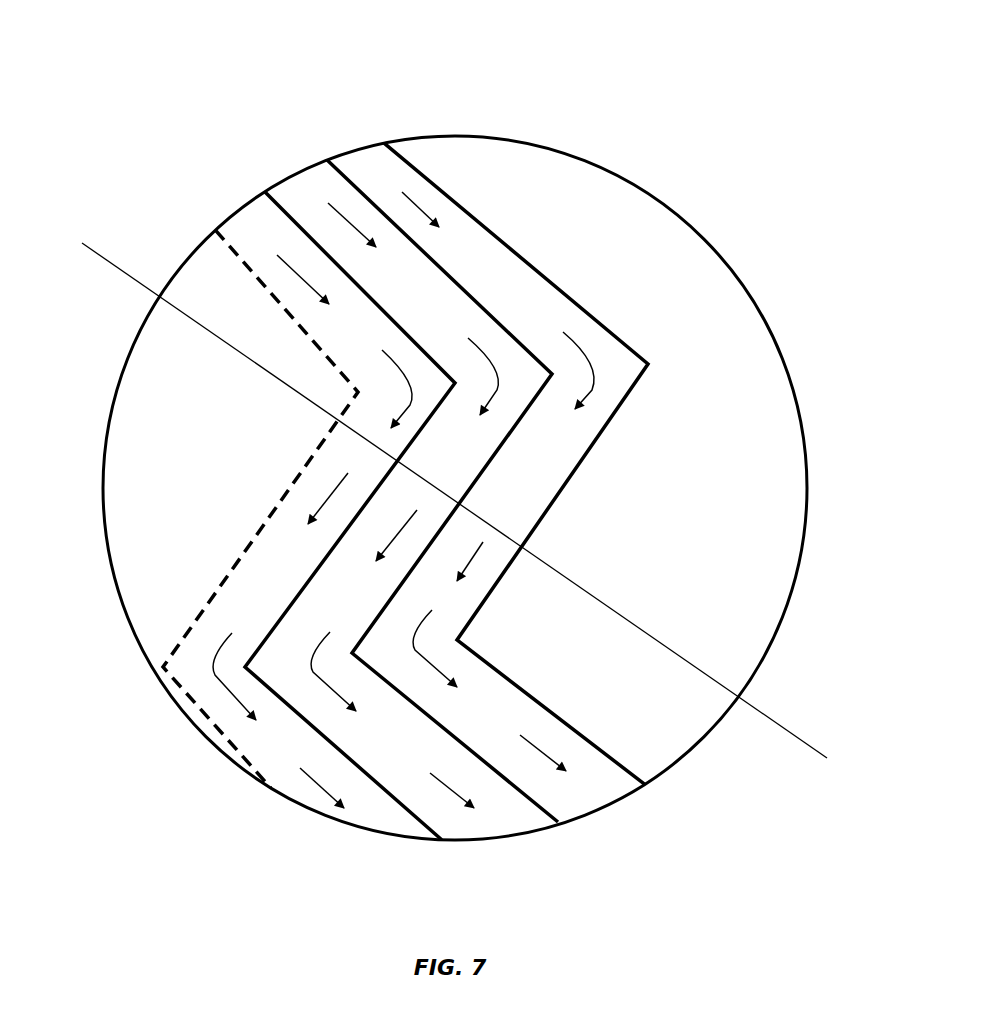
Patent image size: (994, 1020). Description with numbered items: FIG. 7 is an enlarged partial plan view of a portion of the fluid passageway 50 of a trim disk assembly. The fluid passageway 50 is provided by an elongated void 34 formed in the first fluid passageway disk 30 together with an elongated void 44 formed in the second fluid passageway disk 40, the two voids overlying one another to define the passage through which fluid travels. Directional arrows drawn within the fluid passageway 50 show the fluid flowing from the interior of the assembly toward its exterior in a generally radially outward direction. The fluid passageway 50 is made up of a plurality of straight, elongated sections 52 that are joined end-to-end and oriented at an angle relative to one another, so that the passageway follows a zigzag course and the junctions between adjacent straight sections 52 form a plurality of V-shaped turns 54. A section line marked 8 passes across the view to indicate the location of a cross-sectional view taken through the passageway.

The section line 8- 8 is at (82, 243).
The first fluid passageway disk 30 is at (487, 167).
The elongated void 34 is at (303, 136).
The second fluid passageway disk 40 is at (393, 187).
The elongated void 44 is at (233, 166).
The fluid passageway 50 is at (187, 22).
The straight, elongated sections 52 is at (538, 220).
The V-shaped turns 54 is at (700, 354).